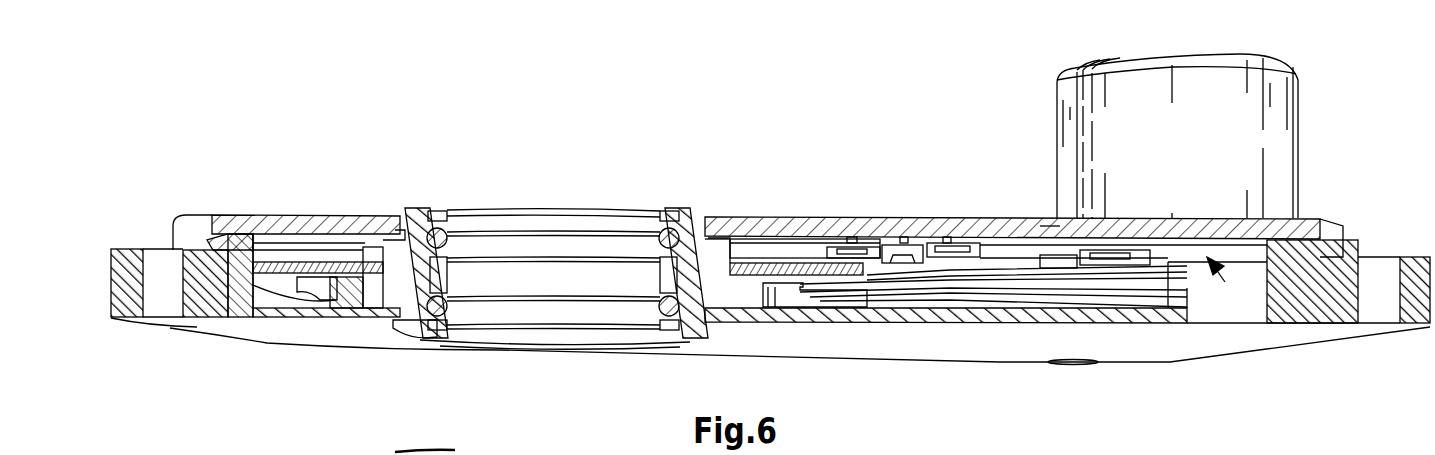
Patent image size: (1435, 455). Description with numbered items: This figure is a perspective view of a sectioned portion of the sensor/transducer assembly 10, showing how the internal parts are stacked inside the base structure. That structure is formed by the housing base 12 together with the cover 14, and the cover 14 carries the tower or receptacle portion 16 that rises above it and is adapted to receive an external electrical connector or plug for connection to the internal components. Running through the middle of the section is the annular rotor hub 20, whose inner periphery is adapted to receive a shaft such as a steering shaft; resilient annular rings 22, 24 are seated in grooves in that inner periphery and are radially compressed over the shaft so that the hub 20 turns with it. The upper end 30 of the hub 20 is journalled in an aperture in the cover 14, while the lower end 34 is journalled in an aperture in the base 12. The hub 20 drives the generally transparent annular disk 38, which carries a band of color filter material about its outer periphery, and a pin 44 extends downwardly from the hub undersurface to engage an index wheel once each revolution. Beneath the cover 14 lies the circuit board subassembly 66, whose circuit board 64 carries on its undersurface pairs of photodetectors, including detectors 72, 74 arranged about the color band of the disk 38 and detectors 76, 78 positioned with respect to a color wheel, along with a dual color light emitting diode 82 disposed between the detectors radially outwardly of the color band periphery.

The sensor/transducer assembly 10 is at (481, 126).
The housing base 12 is at (945, 360).
The cover 14 is at (245, 215).
The tower receptacle portion 16 is at (1300, 134).
The rotor hub 20 is at (678, 216).
The resilient annular ring 22 is at (655, 232).
The resilient annular ring 24 is at (650, 312).
The upper end of hub 30 is at (398, 235).
The lower end of rotor hub 34 is at (392, 322).
The annular disk 38 is at (817, 276).
The pin 44 is at (315, 290).
The circuit board 64 is at (1043, 268).
The circuit board subassembly 66 is at (1225, 282).
The photodetector 72 is at (820, 248).
The photodetector 74 is at (975, 257).
The photodetector 76 is at (1045, 220).
The photodetector 78 is at (1170, 266).
The light emitting diode 82 is at (888, 263).